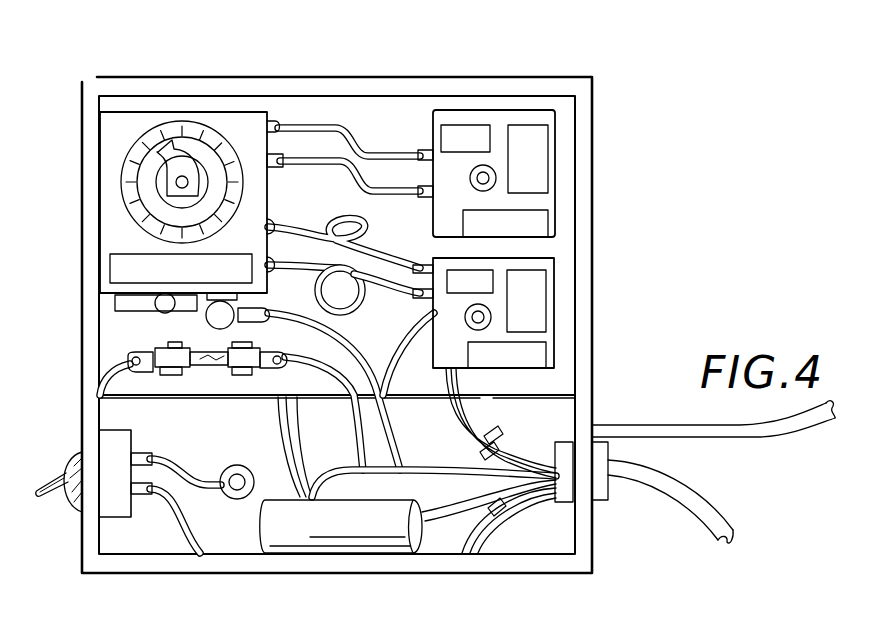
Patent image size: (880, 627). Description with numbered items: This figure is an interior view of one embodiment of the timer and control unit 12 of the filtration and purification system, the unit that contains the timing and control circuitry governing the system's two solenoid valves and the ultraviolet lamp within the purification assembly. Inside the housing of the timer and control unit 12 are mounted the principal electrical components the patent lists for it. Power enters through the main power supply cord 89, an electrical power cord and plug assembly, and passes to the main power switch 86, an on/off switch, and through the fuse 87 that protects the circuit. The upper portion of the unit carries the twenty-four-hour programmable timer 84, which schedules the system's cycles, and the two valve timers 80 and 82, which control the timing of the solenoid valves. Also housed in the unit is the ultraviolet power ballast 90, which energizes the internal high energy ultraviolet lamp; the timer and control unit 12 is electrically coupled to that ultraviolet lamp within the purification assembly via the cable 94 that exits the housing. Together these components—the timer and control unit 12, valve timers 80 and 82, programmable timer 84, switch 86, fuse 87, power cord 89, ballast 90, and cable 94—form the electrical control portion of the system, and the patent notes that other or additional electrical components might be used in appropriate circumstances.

The timer and control unit 12 is at (448, 81).
The valve timer 80 is at (543, 200).
The valve timer 82 is at (533, 356).
The 24-hour programmable timer 84 is at (158, 183).
The main power switch 86 is at (38, 491).
The fuse 87 is at (168, 342).
The main power supply cord 89 is at (705, 500).
The ultraviolet power ballast 90 is at (272, 529).
The cable 94 is at (629, 420).